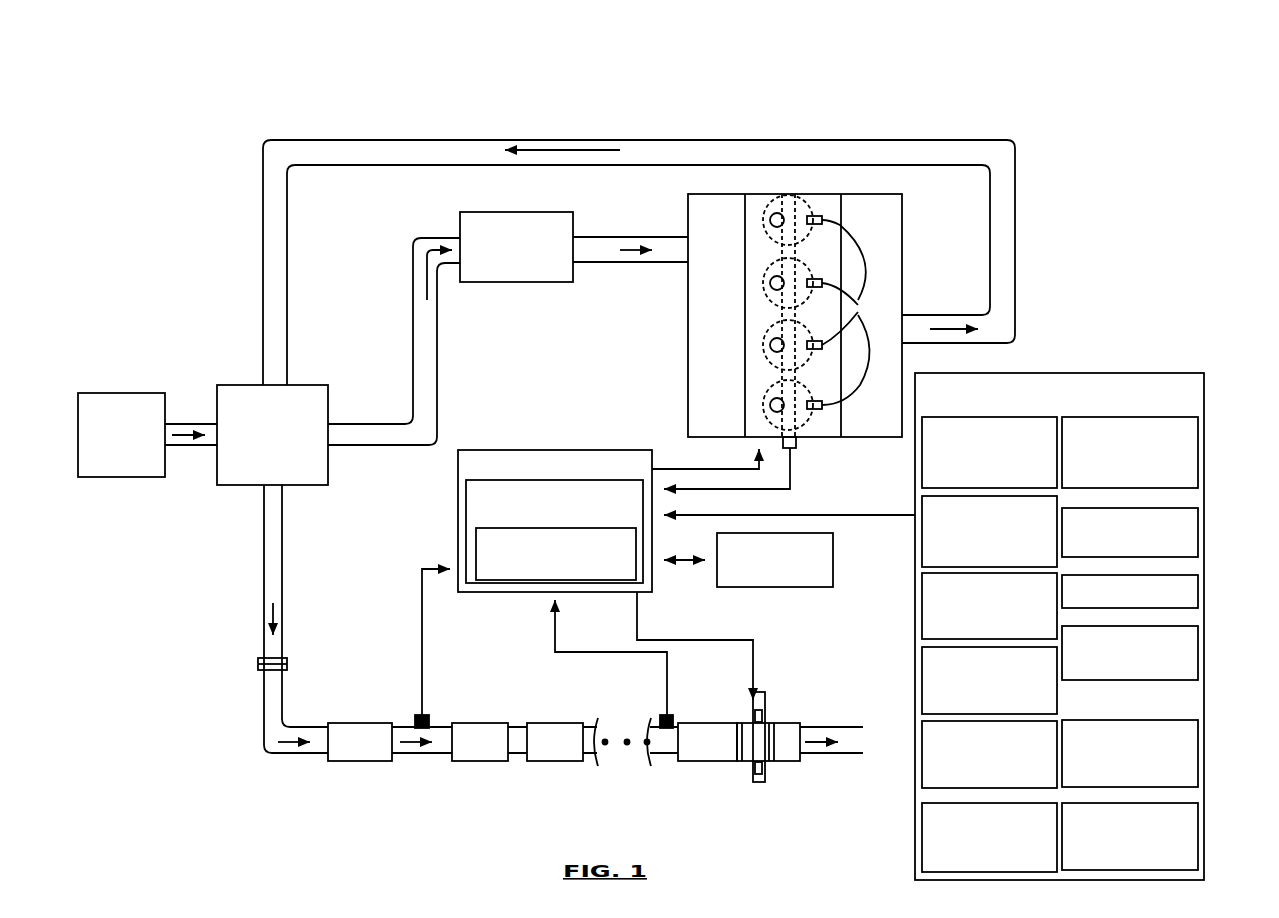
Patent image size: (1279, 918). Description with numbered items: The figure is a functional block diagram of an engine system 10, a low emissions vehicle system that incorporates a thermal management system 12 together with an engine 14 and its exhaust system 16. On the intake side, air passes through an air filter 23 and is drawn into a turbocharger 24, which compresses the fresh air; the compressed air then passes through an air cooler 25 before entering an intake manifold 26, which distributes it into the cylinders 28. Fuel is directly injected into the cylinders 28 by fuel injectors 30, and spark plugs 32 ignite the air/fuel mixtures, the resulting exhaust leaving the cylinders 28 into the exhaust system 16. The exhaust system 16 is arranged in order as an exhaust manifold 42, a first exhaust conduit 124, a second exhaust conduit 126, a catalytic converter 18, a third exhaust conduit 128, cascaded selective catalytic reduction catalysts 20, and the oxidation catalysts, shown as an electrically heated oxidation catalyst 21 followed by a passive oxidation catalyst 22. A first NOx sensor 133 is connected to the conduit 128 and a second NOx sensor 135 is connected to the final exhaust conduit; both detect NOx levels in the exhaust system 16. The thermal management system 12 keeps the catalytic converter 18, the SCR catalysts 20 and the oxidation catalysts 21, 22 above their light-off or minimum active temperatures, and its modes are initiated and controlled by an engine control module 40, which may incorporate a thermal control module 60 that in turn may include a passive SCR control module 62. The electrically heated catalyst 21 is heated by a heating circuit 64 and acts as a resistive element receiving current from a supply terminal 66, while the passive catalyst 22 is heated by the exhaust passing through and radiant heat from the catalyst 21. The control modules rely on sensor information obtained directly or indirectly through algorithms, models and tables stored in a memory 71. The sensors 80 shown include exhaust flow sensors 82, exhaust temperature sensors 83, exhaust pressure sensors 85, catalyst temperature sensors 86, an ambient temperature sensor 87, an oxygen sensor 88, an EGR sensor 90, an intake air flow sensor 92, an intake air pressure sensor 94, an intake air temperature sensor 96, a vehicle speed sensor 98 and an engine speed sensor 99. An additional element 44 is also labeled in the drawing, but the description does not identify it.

The engine system 10 is at (282, 97).
The thermal management system 12 is at (233, 613).
The engine 14 is at (790, 194).
The exhaust system 16 is at (358, 790).
The catalytic converter 18 is at (340, 723).
The cascaded selective catalytic reduction catalysts 20 is at (481, 723).
The electrically heated oxidation catalyst 21 is at (745, 762).
The passive oxidation catalyst 22 is at (785, 762).
The air filter 23 is at (120, 393).
The turbocharger 24 is at (303, 385).
The air cooler 25 is at (560, 212).
The intake manifold 26 is at (688, 215).
The cylinders 28 is at (812, 206).
The fuel injectors 30 is at (852, 312).
The spark plugs 32 is at (770, 220).
The engine control module 40 is at (636, 450).
The exhaust manifold 42 is at (902, 203).
The control signal path 44 is at (390, 612).
The thermal control module 60 is at (466, 497).
The passive SCR control module 62 is at (476, 546).
The heating circuit 64 is at (775, 665).
The supply terminal 66 is at (804, 448).
The memory 71 is at (777, 587).
The sensors 80 is at (1150, 373).
The exhaust flow sensors 82 is at (972, 417).
The exhaust temperature sensors 83 is at (1198, 450).
The exhaust pressure sensors 85 is at (915, 545).
The catalyst temperature sensors 86 is at (915, 600).
The ambient temperature sensor 87 is at (915, 688).
The oxygen sensor 88 is at (1198, 530).
The EGR sensor 90 is at (1198, 590).
The intake air flow sensor 92 is at (1198, 652).
The intake air pressure sensor 94 is at (915, 742).
The intake air temperature sensor 96 is at (1198, 720).
The vehicle speed sensor 98 is at (915, 820).
The engine speed sensor 99 is at (1198, 822).
The first exhaust conduit 124 is at (264, 583).
The second exhaust conduit 126 is at (262, 723).
The third exhaust conduit 128 is at (420, 761).
The first NOx sensor 133 is at (415, 715).
The second NOx sensor 135 is at (660, 715).